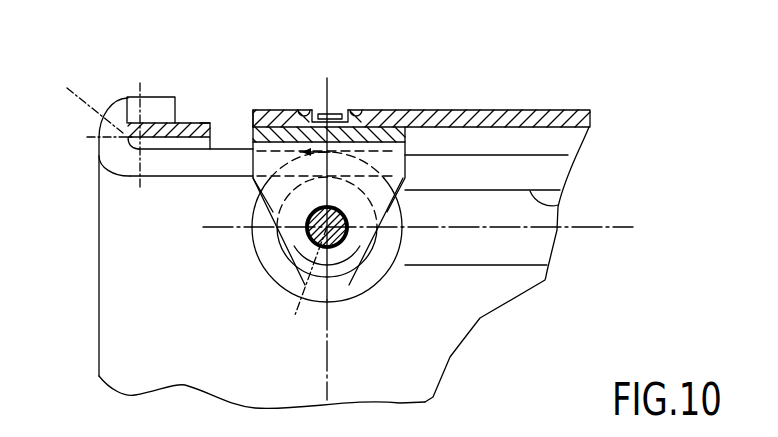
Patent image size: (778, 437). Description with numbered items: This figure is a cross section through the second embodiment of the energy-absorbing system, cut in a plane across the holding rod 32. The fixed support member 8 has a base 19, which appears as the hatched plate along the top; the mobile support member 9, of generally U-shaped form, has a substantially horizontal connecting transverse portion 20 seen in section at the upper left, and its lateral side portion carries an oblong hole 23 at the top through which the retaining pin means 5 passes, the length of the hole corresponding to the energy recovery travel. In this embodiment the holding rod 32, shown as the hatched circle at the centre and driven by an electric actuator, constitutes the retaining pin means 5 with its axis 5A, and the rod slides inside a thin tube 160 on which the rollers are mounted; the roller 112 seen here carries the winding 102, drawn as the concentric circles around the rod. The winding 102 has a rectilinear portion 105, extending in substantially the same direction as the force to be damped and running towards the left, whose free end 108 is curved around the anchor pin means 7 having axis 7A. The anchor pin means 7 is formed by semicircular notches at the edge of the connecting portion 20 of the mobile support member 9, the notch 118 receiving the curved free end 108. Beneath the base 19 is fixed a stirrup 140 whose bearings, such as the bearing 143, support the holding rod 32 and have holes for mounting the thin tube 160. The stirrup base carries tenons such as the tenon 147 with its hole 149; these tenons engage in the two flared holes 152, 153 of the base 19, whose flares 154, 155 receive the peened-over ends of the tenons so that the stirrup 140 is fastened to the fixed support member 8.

The retaining pin means 5 is at (362, 215).
The axis of retaining pin means 5A is at (300, 284).
The anchor pin means 7 is at (116, 112).
The axis of anchor pin means 7A is at (90, 135).
The fixed support member 8 is at (538, 100).
The mobile support member 9 is at (204, 100).
The base 19 is at (474, 117).
The connecting transverse portion 20 is at (187, 124).
The oblong hole 23 is at (560, 200).
The holding rod 32 is at (273, 284).
The winding 102 is at (340, 293).
The rectilinear portion 105 is at (200, 164).
The free end 108 is at (117, 152).
The roller 112 is at (367, 252).
The semicircular notch 118 is at (127, 97).
The stirrup 140 is at (268, 122).
The bearing 143 is at (268, 198).
The tenon 147 is at (337, 113).
The hole 149 is at (320, 114).
The flared hole 152 is at (395, 85).
The flared hole 153 is at (359, 110).
The flare 154 is at (279, 69).
The flare 155 is at (291, 110).
The thin tube 160 is at (350, 255).